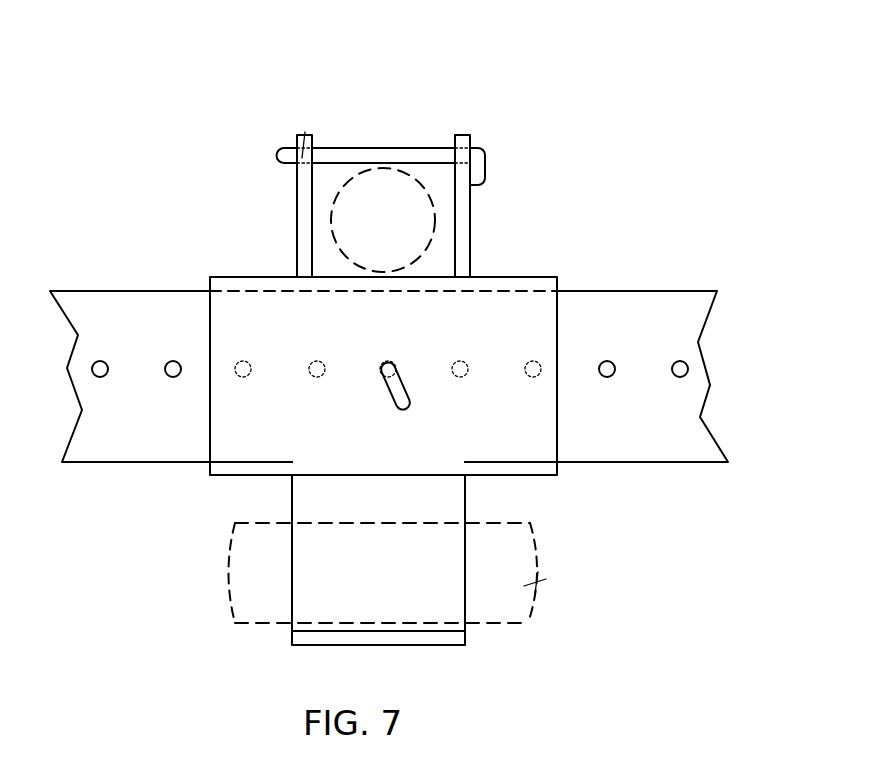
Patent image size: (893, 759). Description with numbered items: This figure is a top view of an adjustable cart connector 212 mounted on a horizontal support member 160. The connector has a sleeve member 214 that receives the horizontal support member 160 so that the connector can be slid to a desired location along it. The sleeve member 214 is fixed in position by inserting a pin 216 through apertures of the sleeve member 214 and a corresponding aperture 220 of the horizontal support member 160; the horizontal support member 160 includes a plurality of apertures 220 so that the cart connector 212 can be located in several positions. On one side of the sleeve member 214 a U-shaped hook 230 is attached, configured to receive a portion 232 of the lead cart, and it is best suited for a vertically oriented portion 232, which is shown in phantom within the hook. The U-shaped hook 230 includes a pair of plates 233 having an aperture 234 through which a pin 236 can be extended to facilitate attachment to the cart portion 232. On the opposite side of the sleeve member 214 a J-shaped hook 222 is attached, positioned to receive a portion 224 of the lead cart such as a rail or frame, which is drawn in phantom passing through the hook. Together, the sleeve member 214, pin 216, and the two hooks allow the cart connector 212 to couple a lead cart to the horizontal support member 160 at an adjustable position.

The horizontal support member 160 is at (697, 455).
The adjustable cart connector 212 is at (541, 177).
The sleeve member 214 is at (525, 280).
The pin 216 is at (402, 395).
The aperture 220 is at (393, 363).
The J-shaped hook 222 is at (453, 643).
The portion of the lead cart 224 is at (567, 577).
The U-shaped hook 230 is at (484, 103).
The portion of the lead cart 232 is at (347, 211).
The plates 233 is at (297, 183).
The aperture 234 is at (305, 130).
The pin 236 is at (356, 147).